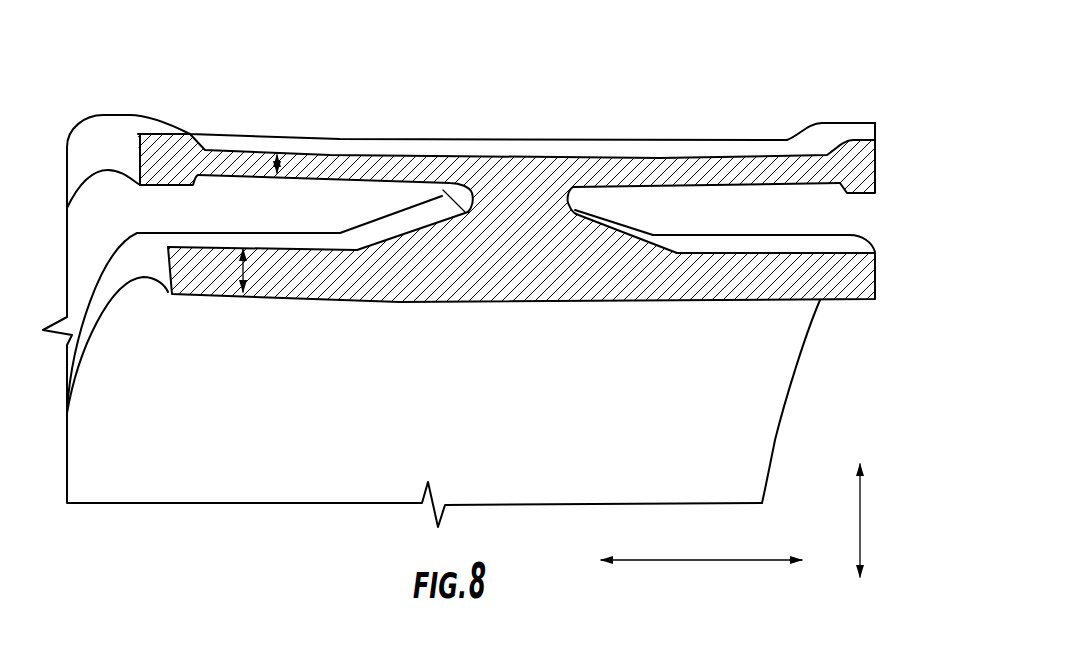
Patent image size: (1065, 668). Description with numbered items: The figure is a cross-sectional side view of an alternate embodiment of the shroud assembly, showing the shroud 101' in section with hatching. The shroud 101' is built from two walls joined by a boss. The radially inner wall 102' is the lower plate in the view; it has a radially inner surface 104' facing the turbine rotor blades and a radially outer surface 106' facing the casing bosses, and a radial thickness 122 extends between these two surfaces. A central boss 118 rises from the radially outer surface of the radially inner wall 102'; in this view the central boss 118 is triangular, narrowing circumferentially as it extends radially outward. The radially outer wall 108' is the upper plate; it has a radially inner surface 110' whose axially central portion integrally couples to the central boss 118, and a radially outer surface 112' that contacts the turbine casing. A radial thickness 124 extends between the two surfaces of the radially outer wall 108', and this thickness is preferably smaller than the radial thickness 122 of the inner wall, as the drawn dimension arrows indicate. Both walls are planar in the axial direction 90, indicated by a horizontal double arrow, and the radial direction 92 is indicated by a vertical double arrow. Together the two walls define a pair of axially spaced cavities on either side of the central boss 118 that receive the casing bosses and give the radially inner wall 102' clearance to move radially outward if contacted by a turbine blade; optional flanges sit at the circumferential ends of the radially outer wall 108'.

The shroud 101' is at (402, 269).
The radially inner wall 102' is at (549, 278).
The radially inner surface 104' is at (824, 401).
The radially outer surface 106' is at (803, 219).
The radially outer wall 108' is at (506, 112).
The radially inner surface 110' is at (148, 198).
The radially outer surface 112' is at (502, 110).
The central boss 118 is at (507, 223).
The radial thickness 122 is at (243, 270).
The radial thickness 124 is at (277, 152).
The axial direction 90 is at (694, 562).
The radial direction 92 is at (862, 527).